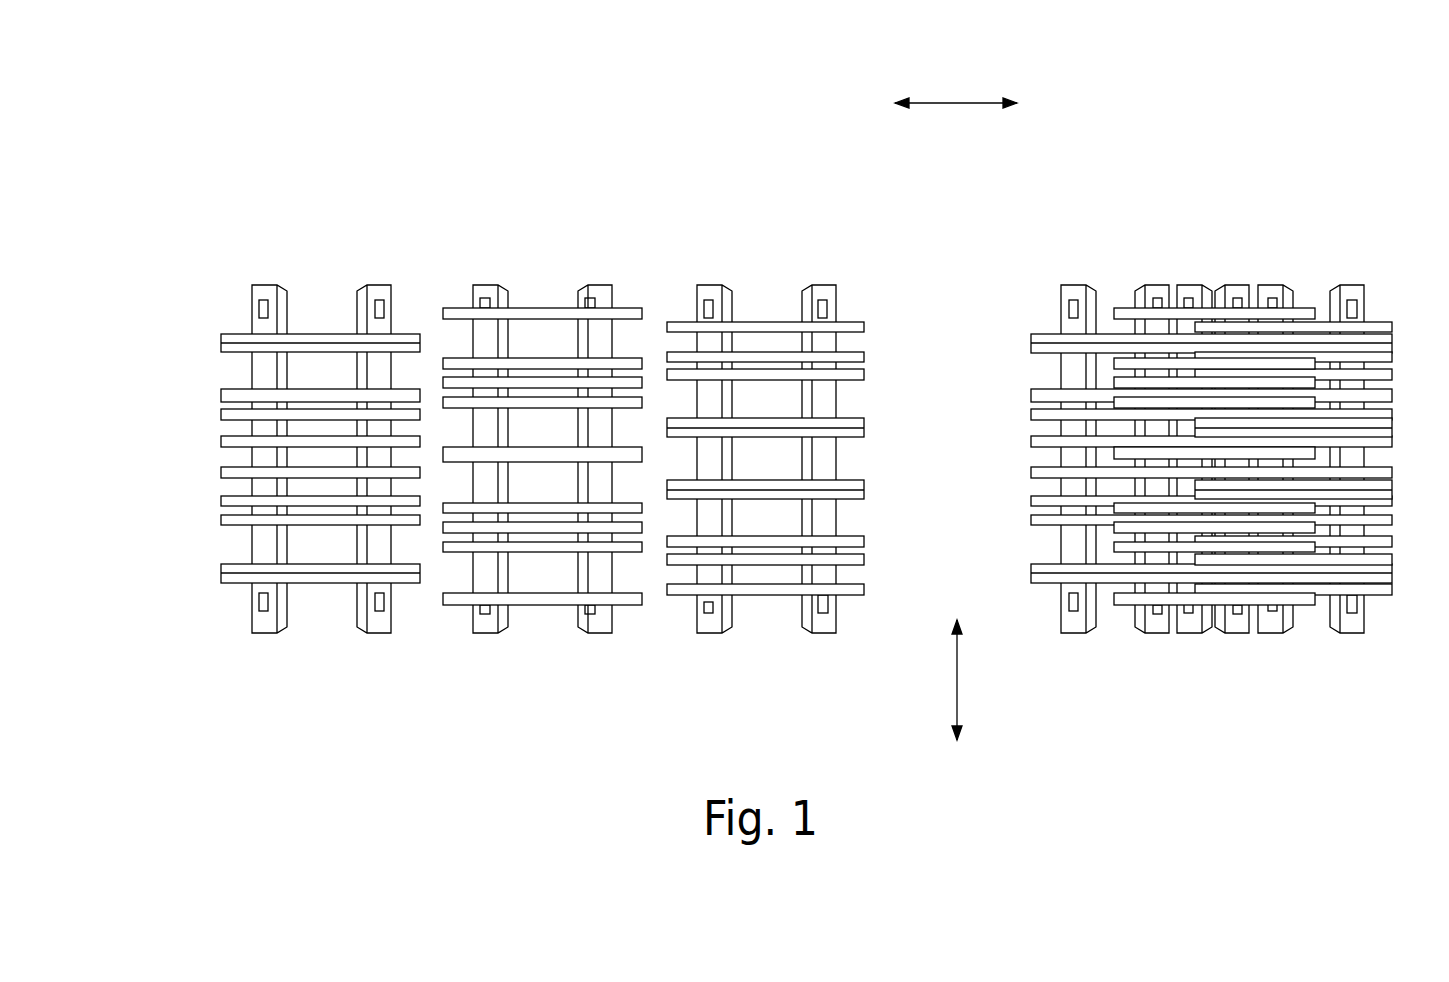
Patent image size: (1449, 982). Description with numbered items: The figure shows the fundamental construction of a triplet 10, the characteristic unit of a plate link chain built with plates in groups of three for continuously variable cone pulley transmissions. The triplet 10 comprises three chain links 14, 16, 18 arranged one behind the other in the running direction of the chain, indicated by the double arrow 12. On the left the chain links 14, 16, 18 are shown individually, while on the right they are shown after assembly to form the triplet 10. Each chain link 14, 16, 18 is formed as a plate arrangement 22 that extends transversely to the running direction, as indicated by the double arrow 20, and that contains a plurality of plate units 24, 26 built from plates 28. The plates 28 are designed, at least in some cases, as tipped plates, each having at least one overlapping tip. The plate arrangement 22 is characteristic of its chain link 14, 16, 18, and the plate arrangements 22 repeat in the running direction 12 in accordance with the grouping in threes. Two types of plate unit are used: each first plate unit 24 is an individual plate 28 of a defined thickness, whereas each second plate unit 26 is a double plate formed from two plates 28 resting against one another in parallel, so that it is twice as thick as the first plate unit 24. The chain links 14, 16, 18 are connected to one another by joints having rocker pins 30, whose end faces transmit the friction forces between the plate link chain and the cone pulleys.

The triplet 10 is at (1397, 196).
The running direction 12 is at (956, 103).
The chain link 14 is at (262, 285).
The chain link 16 is at (485, 285).
The chain link 18 is at (708, 285).
The transverse direction 20 is at (957, 682).
The plate arrangement 22 is at (318, 181).
The first plate unit 24 is at (221, 395).
The second plate unit 26 is at (221, 343).
The plate 28 is at (322, 405).
The rocker pin 30 is at (262, 634).